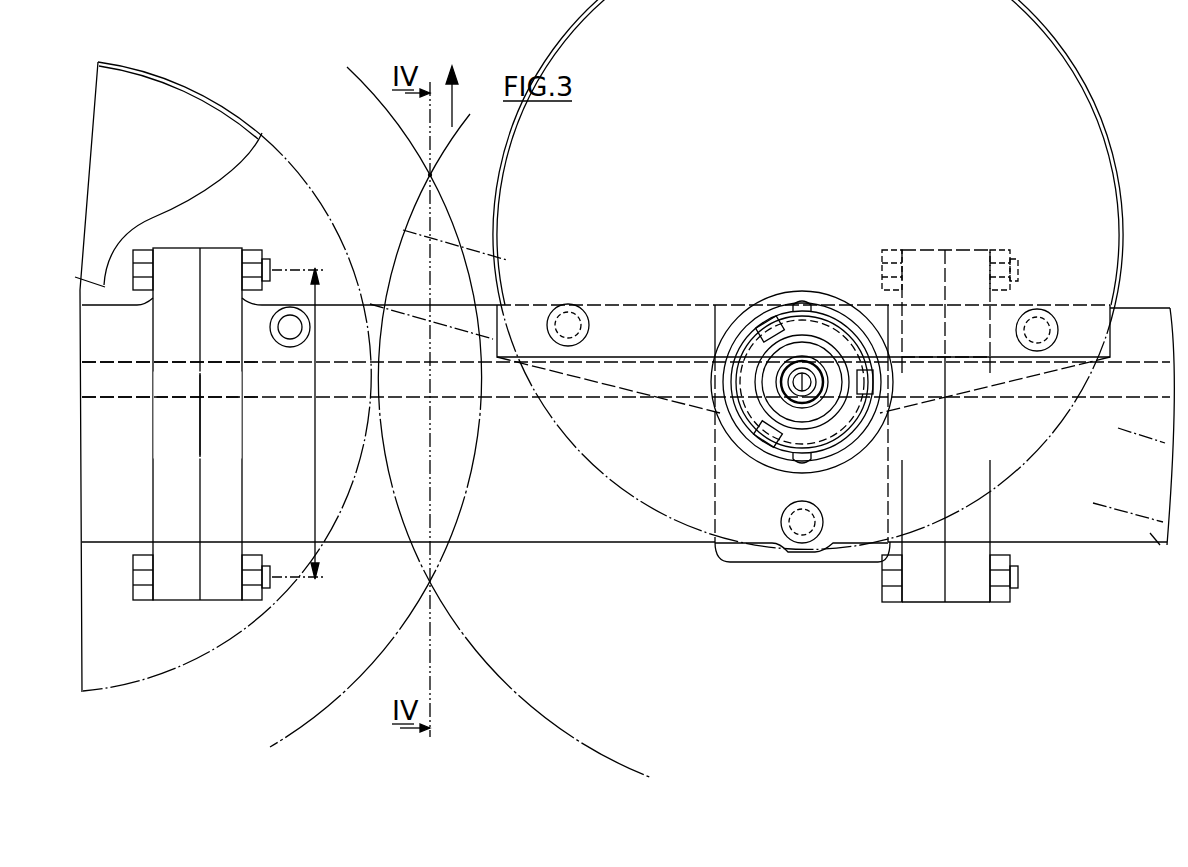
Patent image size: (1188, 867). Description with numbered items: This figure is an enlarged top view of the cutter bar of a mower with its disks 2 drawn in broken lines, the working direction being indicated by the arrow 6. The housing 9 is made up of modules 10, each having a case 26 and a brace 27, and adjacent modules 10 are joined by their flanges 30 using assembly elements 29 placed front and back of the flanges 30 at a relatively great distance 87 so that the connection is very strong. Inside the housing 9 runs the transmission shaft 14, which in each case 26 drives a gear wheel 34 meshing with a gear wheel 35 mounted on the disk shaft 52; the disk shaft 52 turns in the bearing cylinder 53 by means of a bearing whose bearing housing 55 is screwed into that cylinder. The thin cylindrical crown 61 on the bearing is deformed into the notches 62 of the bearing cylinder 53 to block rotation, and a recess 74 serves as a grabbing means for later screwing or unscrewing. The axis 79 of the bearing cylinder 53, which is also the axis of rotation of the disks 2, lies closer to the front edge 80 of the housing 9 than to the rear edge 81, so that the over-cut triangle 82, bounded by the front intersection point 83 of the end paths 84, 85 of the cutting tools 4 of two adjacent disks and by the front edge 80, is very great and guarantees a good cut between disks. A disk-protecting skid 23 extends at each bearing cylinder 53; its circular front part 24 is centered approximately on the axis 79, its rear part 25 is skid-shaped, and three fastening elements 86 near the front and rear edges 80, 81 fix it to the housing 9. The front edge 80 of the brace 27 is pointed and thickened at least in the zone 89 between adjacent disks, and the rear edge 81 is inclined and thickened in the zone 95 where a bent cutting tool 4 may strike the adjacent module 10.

The disk 2 is at (200, 660).
The cutting tool 4 is at (470, 262).
The arrow 6 is at (452, 100).
The housing 9 is at (349, 548).
The module 10 is at (99, 520).
The transmission shaft 14 is at (525, 390).
The disk-protecting skid 23 is at (257, 130).
The front part 24 is at (247, 118).
The rear part 25 is at (752, 552).
The case 26 is at (856, 520).
The brace 27 is at (502, 535).
The assembly element 29 is at (263, 252).
The flange 30 is at (232, 256).
The gear wheel 34 is at (720, 440).
The gear wheel 35 is at (848, 436).
The disk shaft 52 is at (812, 362).
The bearing cylinder 53 is at (766, 312).
The bearing housing 55 is at (820, 440).
The thin cylindrical crown 61 is at (732, 350).
The notch 62 is at (803, 298).
The recess 74 is at (770, 322).
The axis 79 is at (736, 418).
The front edge 80 is at (540, 305).
The rear edge 81 is at (596, 537).
The over-cut triangle 82 is at (436, 222).
The front intersection point 83 is at (433, 175).
The end path 84 is at (382, 108).
The end path 85 is at (466, 122).
The fastening element 86 is at (576, 314).
The distance 87 is at (315, 461).
The zone 89 is at (418, 296).
The zone 95 is at (448, 560).